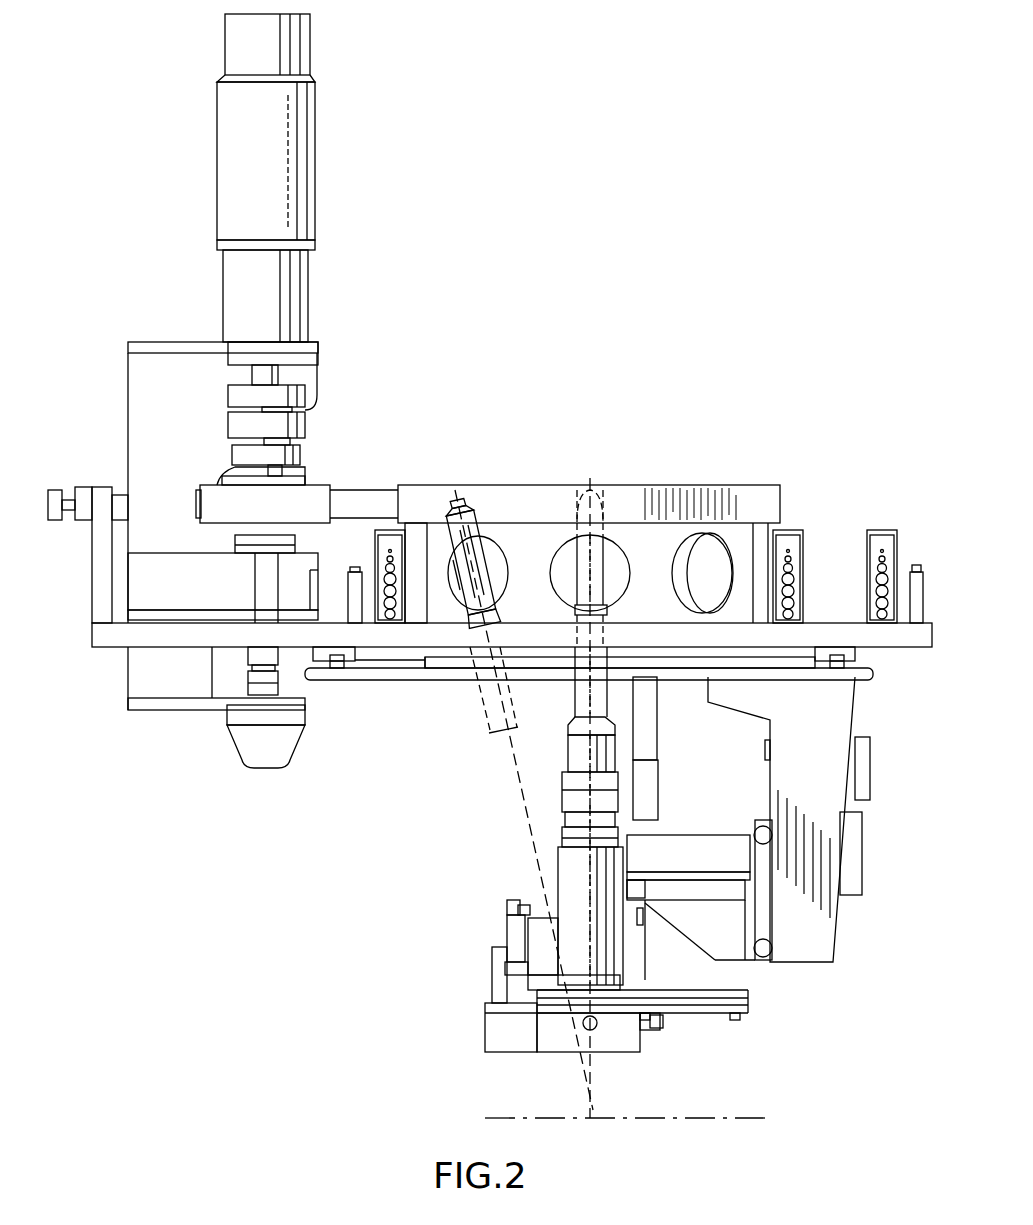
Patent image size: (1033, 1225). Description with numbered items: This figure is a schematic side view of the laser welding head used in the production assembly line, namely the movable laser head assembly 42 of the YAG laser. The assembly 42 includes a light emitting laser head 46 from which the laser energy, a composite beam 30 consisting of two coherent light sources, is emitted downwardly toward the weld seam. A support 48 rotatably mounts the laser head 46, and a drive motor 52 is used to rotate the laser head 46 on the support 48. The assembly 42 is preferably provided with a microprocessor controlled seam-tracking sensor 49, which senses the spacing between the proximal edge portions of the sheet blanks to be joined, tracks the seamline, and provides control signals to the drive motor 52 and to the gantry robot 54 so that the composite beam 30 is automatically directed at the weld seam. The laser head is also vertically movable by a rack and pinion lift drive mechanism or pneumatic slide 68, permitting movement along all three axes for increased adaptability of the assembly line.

The gantry robot 54 is at (308, 216).
The laser head assembly 42 is at (682, 478).
The drive motor 52 is at (577, 760).
The support 48 is at (825, 793).
The pneumatic slide 68 is at (764, 968).
The seam-tracking sensor 49 is at (496, 1038).
The laser head 46 is at (630, 1046).
The composite beam 30 is at (593, 1098).